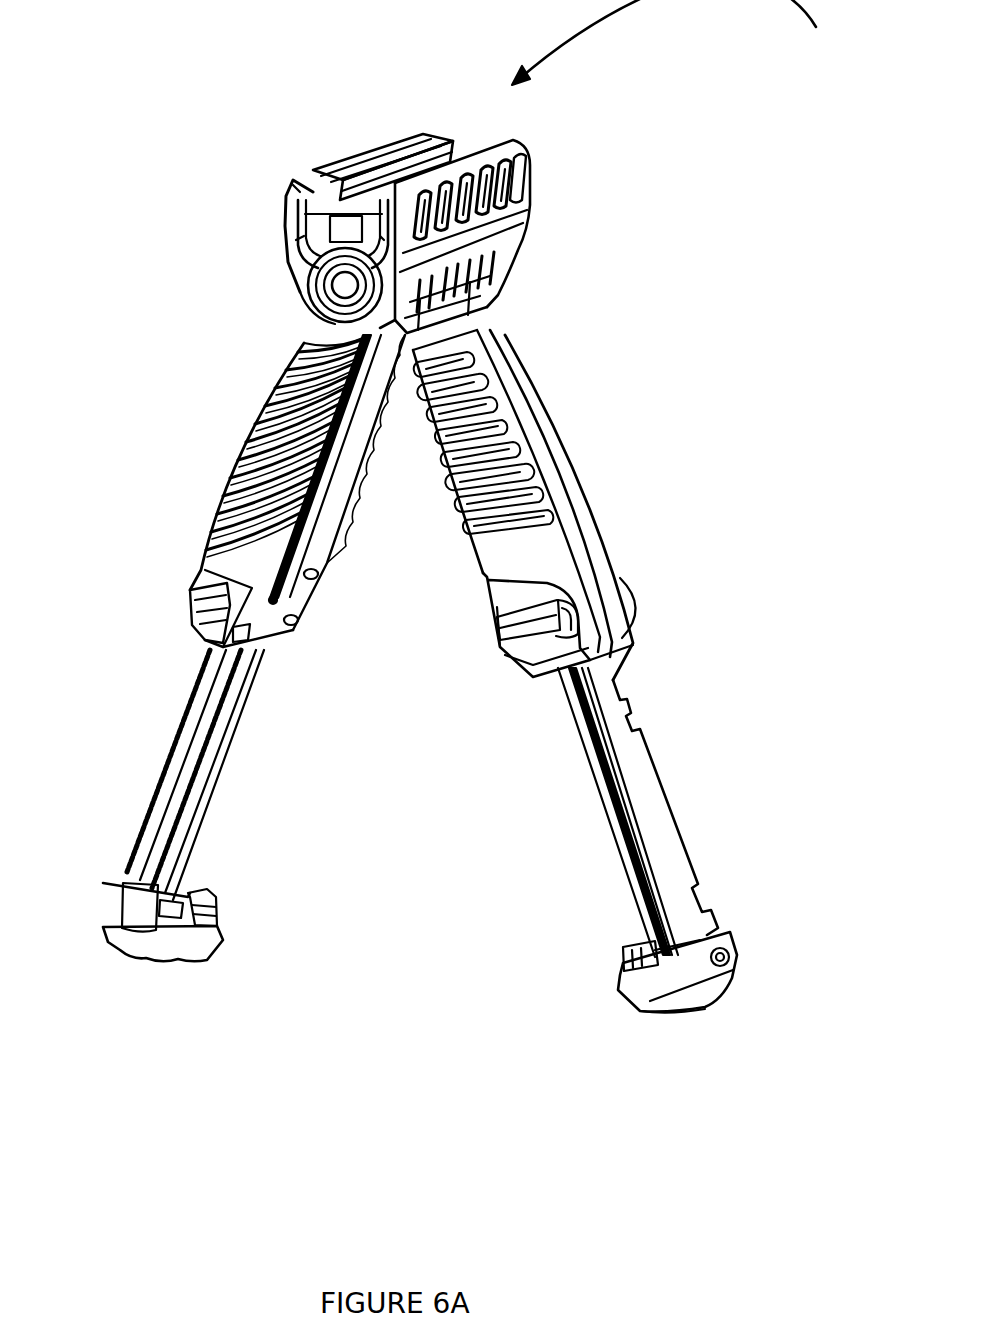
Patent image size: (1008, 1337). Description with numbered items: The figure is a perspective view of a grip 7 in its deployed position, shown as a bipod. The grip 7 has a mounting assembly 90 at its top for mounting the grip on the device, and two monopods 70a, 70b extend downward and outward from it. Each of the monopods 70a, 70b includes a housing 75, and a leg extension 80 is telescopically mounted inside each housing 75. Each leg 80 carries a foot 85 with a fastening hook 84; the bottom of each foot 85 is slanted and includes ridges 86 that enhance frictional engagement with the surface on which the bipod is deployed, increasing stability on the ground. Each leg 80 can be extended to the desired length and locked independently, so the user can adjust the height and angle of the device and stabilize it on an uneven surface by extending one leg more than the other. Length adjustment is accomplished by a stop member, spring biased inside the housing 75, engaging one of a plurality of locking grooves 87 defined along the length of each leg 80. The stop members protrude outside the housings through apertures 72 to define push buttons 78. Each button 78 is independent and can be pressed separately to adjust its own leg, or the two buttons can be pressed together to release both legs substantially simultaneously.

The grip 7 is at (687, 42).
The mounting assembly 90 is at (527, 221).
The monopod 70a is at (240, 472).
The monopod 70b is at (613, 582).
The housing 75 is at (347, 473).
The aperture 72 is at (498, 630).
The push button 78 is at (190, 600).
The leg extension 80 is at (225, 772).
The locking groove 87 is at (640, 720).
The fastening hook 84 is at (218, 905).
The foot 85 is at (160, 968).
The ridges 86 is at (660, 1012).